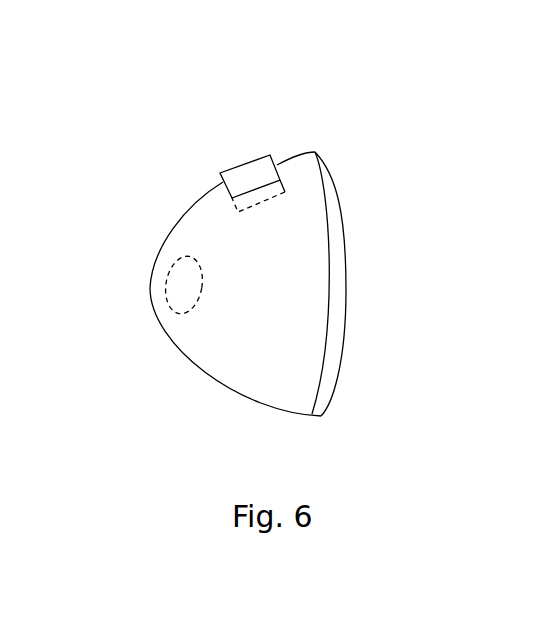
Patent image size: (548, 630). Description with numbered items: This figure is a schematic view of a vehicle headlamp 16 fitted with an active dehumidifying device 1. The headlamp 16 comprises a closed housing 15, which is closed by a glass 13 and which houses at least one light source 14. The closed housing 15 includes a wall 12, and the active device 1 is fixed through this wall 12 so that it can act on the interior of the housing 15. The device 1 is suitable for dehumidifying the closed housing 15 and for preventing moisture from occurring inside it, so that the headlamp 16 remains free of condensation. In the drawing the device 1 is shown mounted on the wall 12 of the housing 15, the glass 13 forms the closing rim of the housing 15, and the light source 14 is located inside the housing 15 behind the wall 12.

The active device 1 is at (252, 142).
The wall 12 is at (218, 218).
The glass 13 is at (343, 260).
The light source 14 is at (182, 302).
The closed housing 15 is at (233, 395).
The vehicle headlamp 16 is at (135, 214).